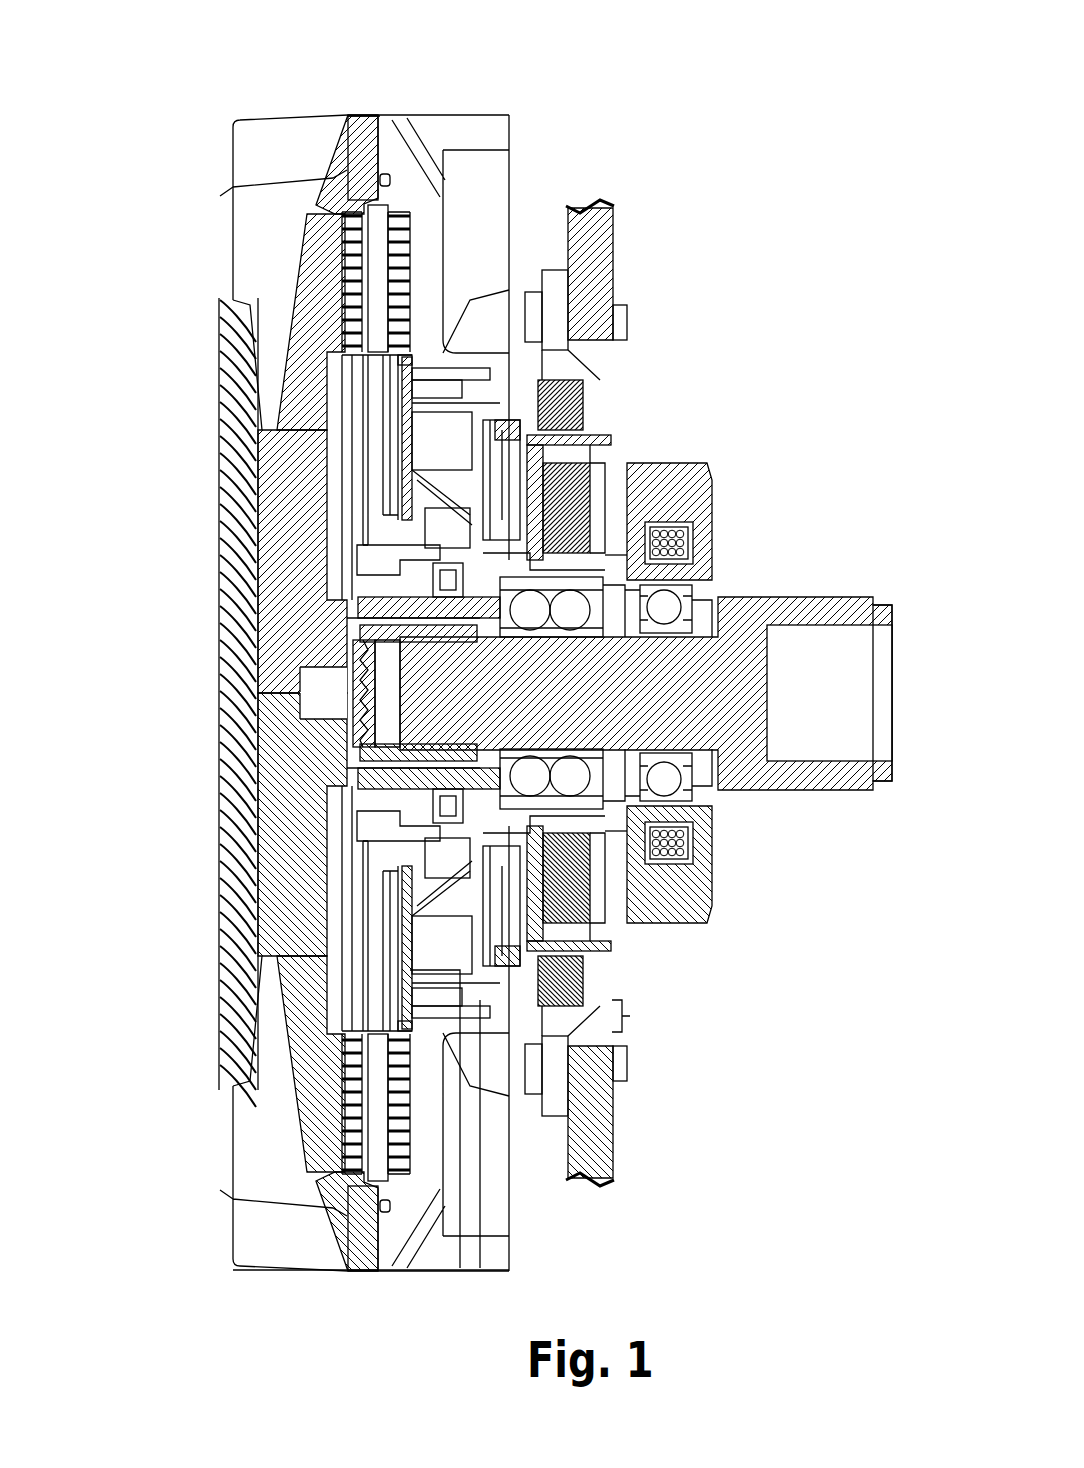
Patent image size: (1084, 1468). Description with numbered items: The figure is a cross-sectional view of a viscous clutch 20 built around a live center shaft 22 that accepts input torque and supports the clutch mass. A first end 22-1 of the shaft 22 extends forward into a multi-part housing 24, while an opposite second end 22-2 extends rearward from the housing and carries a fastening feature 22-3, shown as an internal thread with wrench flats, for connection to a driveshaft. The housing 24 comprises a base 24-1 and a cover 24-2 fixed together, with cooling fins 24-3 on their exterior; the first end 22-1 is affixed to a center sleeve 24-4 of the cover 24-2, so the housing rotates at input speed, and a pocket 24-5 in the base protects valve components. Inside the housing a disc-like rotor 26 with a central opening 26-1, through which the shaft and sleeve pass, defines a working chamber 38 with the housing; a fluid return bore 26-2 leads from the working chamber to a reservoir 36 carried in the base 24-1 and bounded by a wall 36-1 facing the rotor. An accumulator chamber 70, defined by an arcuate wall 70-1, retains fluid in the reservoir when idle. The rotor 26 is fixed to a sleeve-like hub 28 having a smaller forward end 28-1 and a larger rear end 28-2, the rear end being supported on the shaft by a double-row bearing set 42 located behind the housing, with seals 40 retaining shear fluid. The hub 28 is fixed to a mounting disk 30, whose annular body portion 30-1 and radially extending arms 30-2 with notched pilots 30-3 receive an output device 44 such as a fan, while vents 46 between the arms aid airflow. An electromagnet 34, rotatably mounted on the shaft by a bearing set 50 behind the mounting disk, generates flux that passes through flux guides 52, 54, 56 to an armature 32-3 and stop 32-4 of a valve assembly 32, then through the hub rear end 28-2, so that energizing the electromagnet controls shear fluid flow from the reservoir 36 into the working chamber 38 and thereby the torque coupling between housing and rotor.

The viscous clutch 20 is at (785, 215).
The shaft 22 is at (526, 680).
The first end 22-1 is at (462, 690).
The second end 22-2 is at (882, 610).
The fastening feature 22-3 is at (880, 640).
The housing 24 is at (410, 110).
The base 24-1 is at (393, 112).
The cover 24-2 is at (373, 114).
The cooling fins 24-3 is at (511, 143).
The center sleeve 24-4 is at (285, 780).
The pocket 24-5 is at (505, 1030).
The rotor 26 is at (358, 397).
The central opening 26-1 is at (355, 830).
The fluid return bore 26-2 is at (380, 300).
The hub 28 is at (356, 642).
The forward end 28-1 is at (382, 615).
The rear end 28-2 is at (648, 480).
The mounting disk 30 is at (644, 350).
The body portion 30-1 is at (575, 410).
The arms 30-2 is at (560, 352).
The pilot 30-3 is at (592, 1062).
The valve assembly 32 is at (535, 487).
The armature 32-3 is at (560, 940).
The stop 32-4 is at (525, 860).
The electromagnet 34 is at (680, 535).
The reservoir 36 is at (490, 372).
The wall 36-1 is at (416, 388).
The working chamber 38 is at (350, 215).
The seals 40 is at (425, 805).
The bearing set 42 is at (615, 875).
The output device 44 is at (615, 238).
The vents 46 is at (641, 1016).
The bearing set 50 is at (665, 790).
The flux guide 52 is at (600, 895).
The flux guide 54 is at (572, 440).
The flux guide 56 is at (520, 1120).
The accumulator chamber 70 is at (445, 1000).
The arcuate wall 70-1 is at (435, 955).